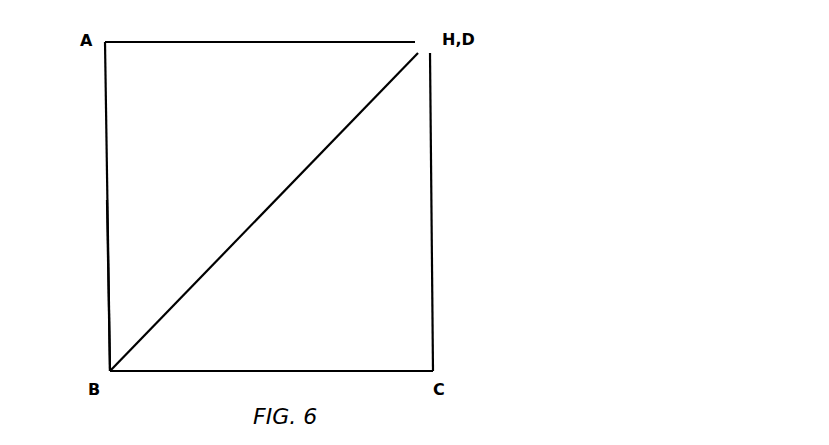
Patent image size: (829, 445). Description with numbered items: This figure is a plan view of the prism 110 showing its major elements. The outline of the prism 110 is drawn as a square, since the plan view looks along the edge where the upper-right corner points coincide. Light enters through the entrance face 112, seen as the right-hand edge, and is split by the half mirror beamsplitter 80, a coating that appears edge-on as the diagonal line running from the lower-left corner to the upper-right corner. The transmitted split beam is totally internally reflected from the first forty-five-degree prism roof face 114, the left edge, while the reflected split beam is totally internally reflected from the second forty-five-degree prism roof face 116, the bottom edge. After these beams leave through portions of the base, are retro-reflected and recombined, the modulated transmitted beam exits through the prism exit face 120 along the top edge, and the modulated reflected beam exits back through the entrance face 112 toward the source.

The prism exit face 120 is at (157, 34).
The prism 110 is at (104, 69).
The first 45-degree prism roof face 114 is at (128, 302).
The second 45-degree prism roof face 116 is at (368, 338).
The entrance face 112 is at (440, 310).
The half mirror beamsplitter 80 is at (190, 302).